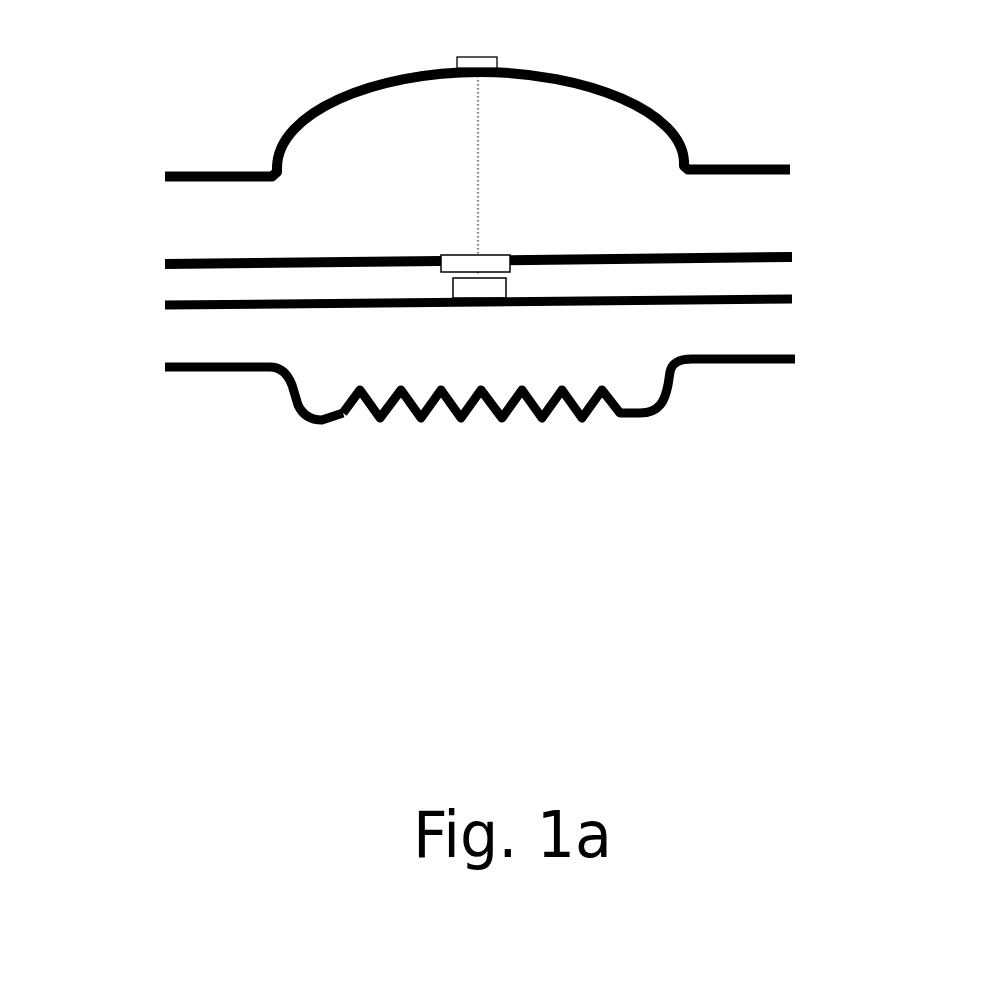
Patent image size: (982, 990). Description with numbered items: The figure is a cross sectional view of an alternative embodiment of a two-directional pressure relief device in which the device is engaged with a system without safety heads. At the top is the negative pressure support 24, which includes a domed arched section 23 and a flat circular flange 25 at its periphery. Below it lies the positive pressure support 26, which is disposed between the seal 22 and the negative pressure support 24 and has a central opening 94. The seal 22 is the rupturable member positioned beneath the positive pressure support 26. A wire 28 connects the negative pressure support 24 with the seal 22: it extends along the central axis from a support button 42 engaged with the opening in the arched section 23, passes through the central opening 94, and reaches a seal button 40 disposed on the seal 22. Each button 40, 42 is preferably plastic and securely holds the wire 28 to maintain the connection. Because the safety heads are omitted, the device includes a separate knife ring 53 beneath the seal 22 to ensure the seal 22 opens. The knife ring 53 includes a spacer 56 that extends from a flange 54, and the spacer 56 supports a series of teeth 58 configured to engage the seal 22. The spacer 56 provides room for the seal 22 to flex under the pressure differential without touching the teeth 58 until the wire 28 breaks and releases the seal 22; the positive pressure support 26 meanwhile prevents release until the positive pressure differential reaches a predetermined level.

The seal 22 is at (770, 295).
The arched section 23 is at (619, 94).
The negative pressure support 24 is at (522, 120).
The circular flange 25 is at (750, 163).
The positive pressure support 26 is at (722, 252).
The wire 28 is at (477, 193).
The seal button 40 is at (490, 292).
The support button 42 is at (468, 56).
The knife ring 53 is at (412, 423).
The flange 54 is at (185, 365).
The spacer 56 is at (298, 410).
The teeth 58 is at (458, 438).
The central opening 94 is at (497, 256).